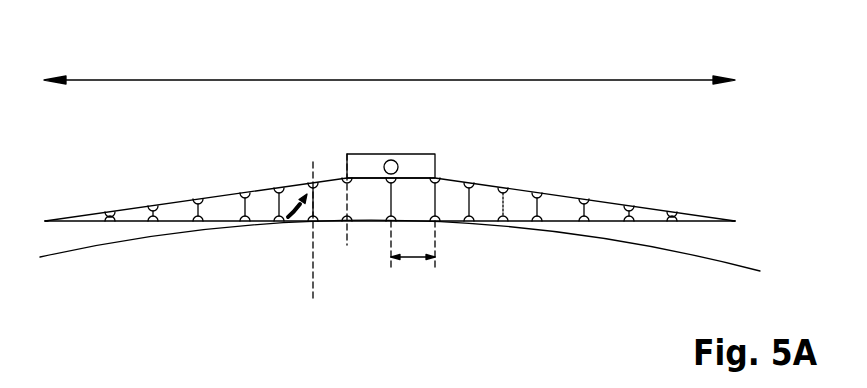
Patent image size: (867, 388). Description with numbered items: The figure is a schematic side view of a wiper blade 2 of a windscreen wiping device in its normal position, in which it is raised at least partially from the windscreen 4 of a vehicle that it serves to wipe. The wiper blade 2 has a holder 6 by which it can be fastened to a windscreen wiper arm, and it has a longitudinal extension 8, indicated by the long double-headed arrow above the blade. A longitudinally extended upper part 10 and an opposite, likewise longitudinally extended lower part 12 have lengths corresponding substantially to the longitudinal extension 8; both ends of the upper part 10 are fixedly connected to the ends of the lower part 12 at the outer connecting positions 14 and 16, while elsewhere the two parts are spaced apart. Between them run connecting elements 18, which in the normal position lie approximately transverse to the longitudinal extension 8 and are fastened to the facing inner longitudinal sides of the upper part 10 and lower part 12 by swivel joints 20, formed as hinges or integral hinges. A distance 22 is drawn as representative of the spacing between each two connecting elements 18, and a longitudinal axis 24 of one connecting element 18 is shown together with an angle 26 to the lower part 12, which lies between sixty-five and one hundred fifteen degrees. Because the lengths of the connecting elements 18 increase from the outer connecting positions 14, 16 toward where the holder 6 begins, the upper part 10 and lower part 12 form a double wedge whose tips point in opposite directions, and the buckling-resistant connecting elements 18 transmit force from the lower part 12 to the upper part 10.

The wiper blade 2 is at (626, 165).
The windscreen 4 is at (658, 247).
The holder 6 is at (418, 165).
The longitudinal extension 8 is at (392, 79).
The upper part 10 is at (218, 195).
The lower part 12 is at (563, 224).
The outer connecting position 14 is at (45, 219).
The outer connecting position 16 is at (735, 219).
The connecting element 18 is at (278, 207).
The swivel joint 20 is at (279, 186).
The distance 22 is at (411, 260).
The longitudinal axis 24 is at (313, 300).
The angle 26 is at (290, 225).